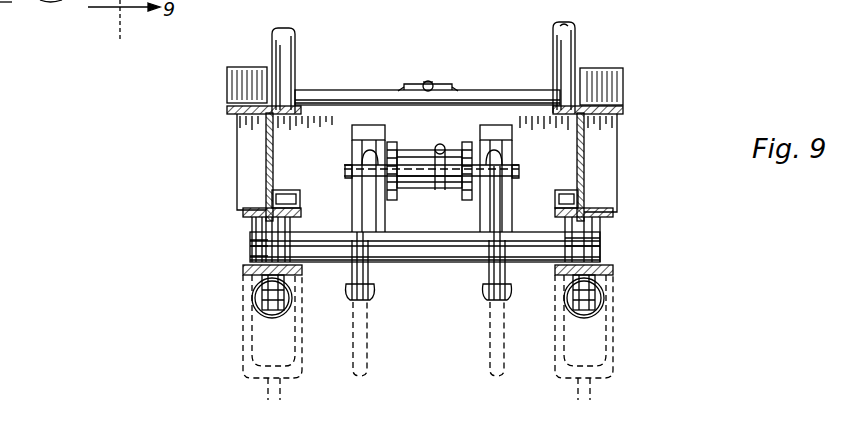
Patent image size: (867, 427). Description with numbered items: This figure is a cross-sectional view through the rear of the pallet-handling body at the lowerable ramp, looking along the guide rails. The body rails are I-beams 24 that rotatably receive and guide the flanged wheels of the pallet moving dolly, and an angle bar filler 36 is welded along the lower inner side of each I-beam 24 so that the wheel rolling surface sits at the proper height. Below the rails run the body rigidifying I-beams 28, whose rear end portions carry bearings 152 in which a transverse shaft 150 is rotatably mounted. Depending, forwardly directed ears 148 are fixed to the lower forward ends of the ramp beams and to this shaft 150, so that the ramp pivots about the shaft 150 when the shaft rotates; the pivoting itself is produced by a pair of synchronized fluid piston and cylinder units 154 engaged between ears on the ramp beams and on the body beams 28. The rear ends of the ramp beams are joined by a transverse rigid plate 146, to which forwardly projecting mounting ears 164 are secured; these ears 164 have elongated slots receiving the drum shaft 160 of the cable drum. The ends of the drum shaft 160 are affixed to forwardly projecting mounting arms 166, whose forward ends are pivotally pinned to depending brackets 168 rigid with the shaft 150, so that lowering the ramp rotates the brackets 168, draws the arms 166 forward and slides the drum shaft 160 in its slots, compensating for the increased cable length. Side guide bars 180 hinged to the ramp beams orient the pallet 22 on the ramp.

The pallet 22 is at (574, 48).
The side guide bar 180 is at (630, 80).
The transverse rigid plate 146 is at (520, 132).
The guide rail I-beam 24 is at (592, 161).
The angle bar filler 36 is at (582, 195).
The rigidifying I-beam 28 is at (590, 241).
The depending forwardly directed ear 148 is at (284, 238).
The bearing 152 is at (255, 244).
The fluid piston and cylinder unit 154 is at (595, 330).
The transverse shaft 150 is at (437, 245).
The drum shaft 160 is at (505, 162).
The forwardly projecting mounting ear 164 is at (377, 134).
The forwardly projecting mounting arm 166 is at (497, 202).
The depending bracket 168 is at (492, 272).